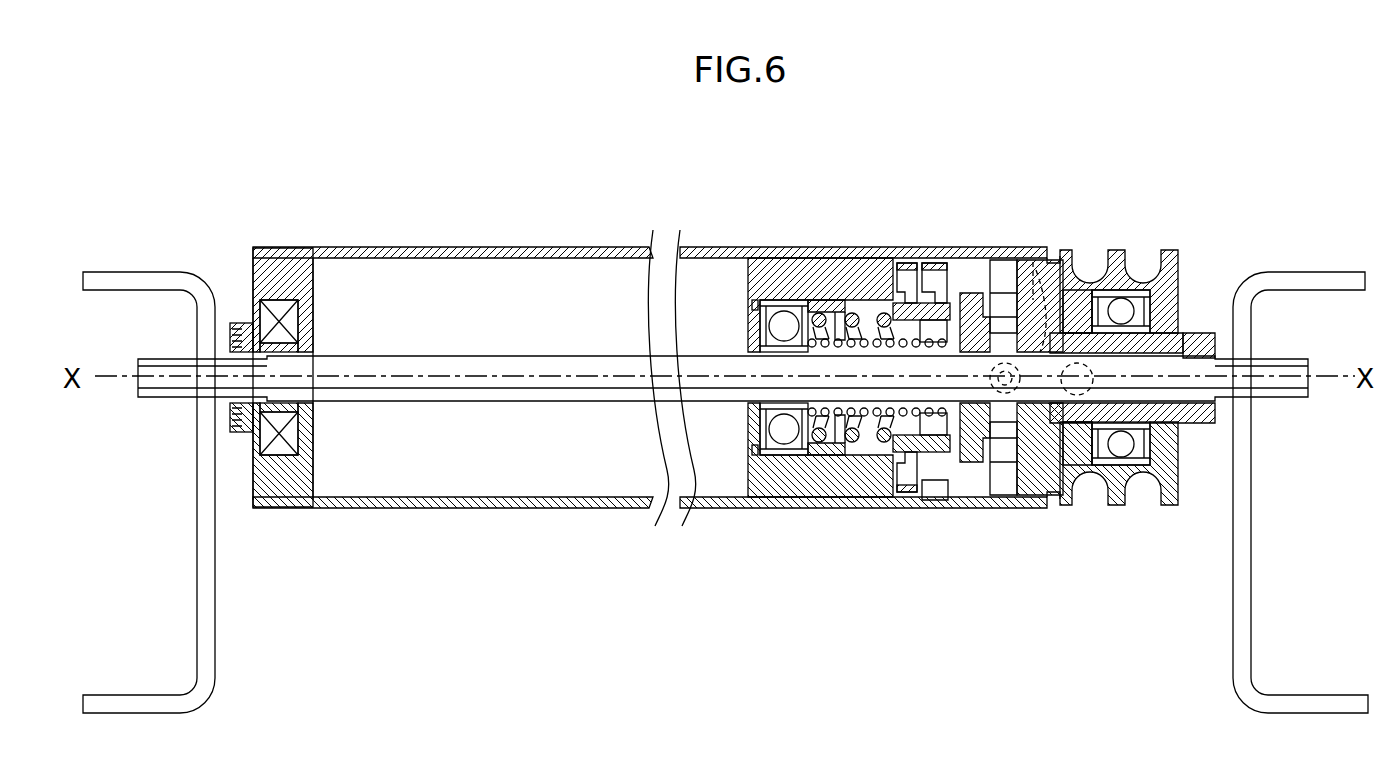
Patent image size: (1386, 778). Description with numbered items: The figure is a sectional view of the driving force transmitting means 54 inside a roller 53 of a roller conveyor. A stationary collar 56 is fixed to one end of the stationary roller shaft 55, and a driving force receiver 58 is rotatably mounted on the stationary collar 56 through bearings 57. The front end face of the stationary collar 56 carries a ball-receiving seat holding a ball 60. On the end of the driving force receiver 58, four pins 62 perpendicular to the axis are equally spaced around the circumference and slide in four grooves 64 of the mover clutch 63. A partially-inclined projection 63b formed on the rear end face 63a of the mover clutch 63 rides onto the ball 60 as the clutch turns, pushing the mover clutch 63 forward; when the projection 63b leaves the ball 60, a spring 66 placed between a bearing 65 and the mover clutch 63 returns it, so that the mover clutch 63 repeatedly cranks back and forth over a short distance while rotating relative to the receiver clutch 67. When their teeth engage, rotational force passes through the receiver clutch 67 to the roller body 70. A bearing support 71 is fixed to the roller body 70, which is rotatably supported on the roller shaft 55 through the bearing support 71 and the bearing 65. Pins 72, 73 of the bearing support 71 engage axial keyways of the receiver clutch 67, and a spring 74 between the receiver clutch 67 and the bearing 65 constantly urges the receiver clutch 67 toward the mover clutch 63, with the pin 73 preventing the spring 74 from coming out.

The roller 53 is at (350, 198).
The driving force transmitting means 54 is at (886, 518).
The stationary roller shaft 55 is at (1290, 400).
The stationary collar 56 is at (1186, 424).
The bearings 57 is at (1150, 313).
The driving force receiver 58 is at (1118, 238).
The ball 60 is at (1078, 397).
The pins 62 is at (998, 260).
The mover clutch 63 is at (968, 460).
The rear end face 63a is at (1058, 468).
The partially-inclined projection 63b is at (1136, 264).
The grooves 64 is at (1033, 260).
The bearing 65 is at (775, 456).
The spring 66 is at (826, 455).
The receiver clutch 67 is at (900, 480).
The roller body 70 is at (485, 238).
The bearing support 71 is at (770, 258).
The pin 72 is at (940, 258).
The pin 73 is at (936, 500).
The spring 74 is at (853, 300).